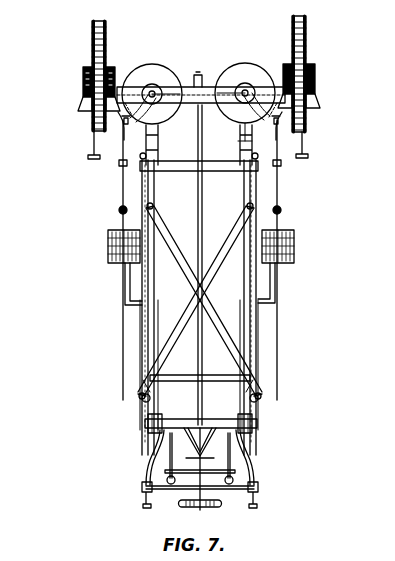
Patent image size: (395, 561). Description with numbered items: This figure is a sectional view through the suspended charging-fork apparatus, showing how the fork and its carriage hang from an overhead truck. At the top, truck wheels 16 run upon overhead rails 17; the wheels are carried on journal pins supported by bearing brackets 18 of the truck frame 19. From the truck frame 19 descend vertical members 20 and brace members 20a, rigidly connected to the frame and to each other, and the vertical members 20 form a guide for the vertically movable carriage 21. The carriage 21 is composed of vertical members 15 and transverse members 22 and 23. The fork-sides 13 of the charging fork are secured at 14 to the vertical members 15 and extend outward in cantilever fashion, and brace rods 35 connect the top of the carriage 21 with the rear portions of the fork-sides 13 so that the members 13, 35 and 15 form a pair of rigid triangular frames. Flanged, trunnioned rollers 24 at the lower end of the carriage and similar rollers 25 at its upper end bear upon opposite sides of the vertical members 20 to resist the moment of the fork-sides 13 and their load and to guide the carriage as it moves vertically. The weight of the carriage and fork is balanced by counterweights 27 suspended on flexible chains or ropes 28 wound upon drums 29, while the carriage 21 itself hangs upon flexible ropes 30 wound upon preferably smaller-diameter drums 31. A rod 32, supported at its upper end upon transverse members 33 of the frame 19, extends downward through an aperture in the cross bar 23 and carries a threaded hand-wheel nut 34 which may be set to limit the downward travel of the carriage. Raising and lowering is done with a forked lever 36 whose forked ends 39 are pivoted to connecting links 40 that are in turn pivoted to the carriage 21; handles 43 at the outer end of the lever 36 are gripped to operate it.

The fork-sides 13 is at (146, 487).
The securing point 14 is at (142, 490).
The vertical members 15 is at (156, 461).
The truck wheels 16 is at (92, 23).
The overhead rails 17 is at (92, 160).
The bearing brackets 18 is at (82, 94).
The truck frame 19 is at (258, 116).
The vertical members 20 is at (142, 364).
The brace members 20a is at (286, 363).
The carriage 21 is at (170, 330).
The transverse member 22 is at (212, 174).
The transverse member 23 is at (214, 418).
The flanged trunnioned rollers 24 is at (146, 421).
The flanged trunnioned rollers 25 is at (140, 173).
The counterweights 27 is at (106, 261).
The flexible chains or ropes 28 is at (116, 121).
The drums 29 is at (152, 67).
The flexible ropes 30 is at (158, 130).
The drums 31 is at (172, 90).
The rod 32 is at (198, 206).
The transverse members 33 is at (203, 70).
The hand-wheel nut 34 is at (211, 443).
The brace rods 35 is at (144, 313).
The forked lever 36 is at (208, 473).
The forked end 39 is at (200, 369).
The connecting link 40 is at (144, 401).
The handles 43 is at (216, 509).